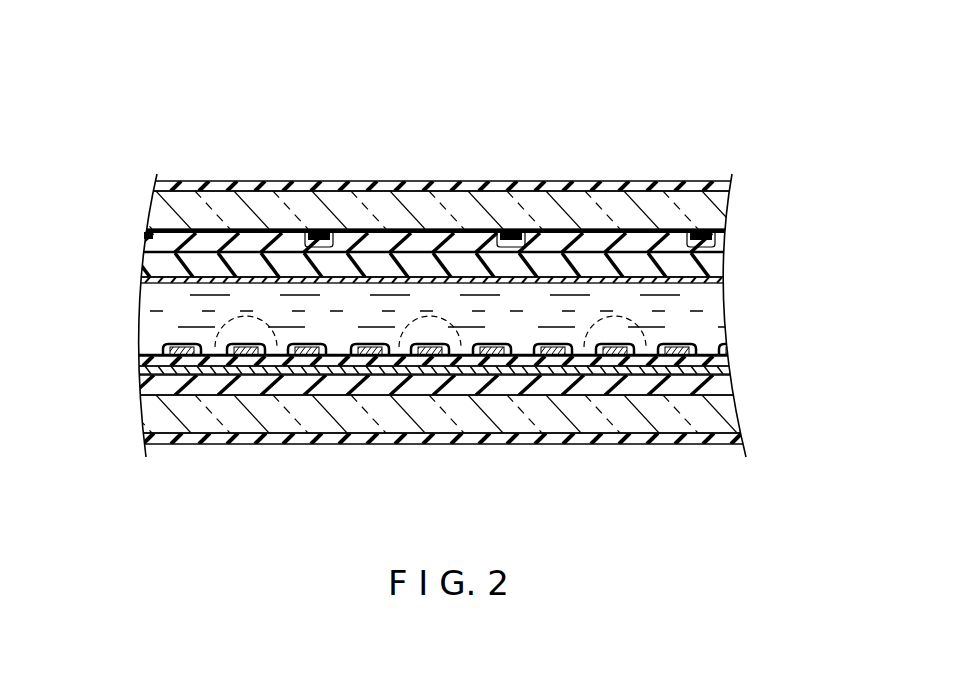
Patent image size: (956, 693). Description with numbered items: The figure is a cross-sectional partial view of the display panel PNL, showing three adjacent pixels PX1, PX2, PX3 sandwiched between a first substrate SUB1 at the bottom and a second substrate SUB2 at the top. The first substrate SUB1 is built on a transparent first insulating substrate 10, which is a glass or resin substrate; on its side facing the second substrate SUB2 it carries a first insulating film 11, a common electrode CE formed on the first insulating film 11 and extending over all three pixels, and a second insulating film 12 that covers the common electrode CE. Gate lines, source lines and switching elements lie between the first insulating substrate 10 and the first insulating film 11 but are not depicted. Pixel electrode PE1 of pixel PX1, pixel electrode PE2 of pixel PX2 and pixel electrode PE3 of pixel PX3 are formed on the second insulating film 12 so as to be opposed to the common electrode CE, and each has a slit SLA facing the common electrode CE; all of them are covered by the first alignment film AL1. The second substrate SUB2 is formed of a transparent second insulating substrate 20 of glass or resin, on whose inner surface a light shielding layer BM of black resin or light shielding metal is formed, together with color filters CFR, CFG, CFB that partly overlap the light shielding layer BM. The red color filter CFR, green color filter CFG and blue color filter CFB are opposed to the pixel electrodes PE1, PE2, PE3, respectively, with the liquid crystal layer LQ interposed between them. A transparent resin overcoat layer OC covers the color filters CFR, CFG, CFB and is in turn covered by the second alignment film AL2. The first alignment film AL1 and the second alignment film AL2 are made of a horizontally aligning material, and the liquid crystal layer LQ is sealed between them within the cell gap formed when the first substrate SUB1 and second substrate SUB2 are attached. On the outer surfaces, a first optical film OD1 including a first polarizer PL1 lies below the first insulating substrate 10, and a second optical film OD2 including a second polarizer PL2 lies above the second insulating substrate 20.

The display panel PNL is at (605, 82).
The pixel PX1 is at (274, 177).
The pixel PX2 is at (466, 177).
The pixel PX3 is at (646, 177).
The light shielding layer BM is at (151, 232).
The color filter CFR is at (440, 199).
The color filter CFG is at (440, 199).
The color filter CFB is at (604, 240).
The second optical film OD2 is at (407, 169).
The second polarizer PL2 is at (153, 186).
The second insulating substrate 20 is at (153, 213).
The second substrate SUB2 is at (742, 213).
The overcoat layer OC is at (150, 265).
The second alignment film AL2 is at (146, 280).
The liquid crystal layer LQ is at (712, 309).
The slit SLA is at (246, 322).
The first alignment film AL1 is at (408, 402).
The second insulating film 12 is at (152, 361).
The common electrode CE is at (152, 370).
The first insulating film 11 is at (152, 386).
The first insulating substrate 10 is at (152, 415).
The first substrate SUB1 is at (757, 393).
The first optical film OD1 is at (407, 453).
The first polarizer PL1 is at (152, 438).
The pixel electrode PE1 is at (440, 416).
The pixel electrode PE2 is at (440, 416).
The pixel electrode PE3 is at (549, 357).